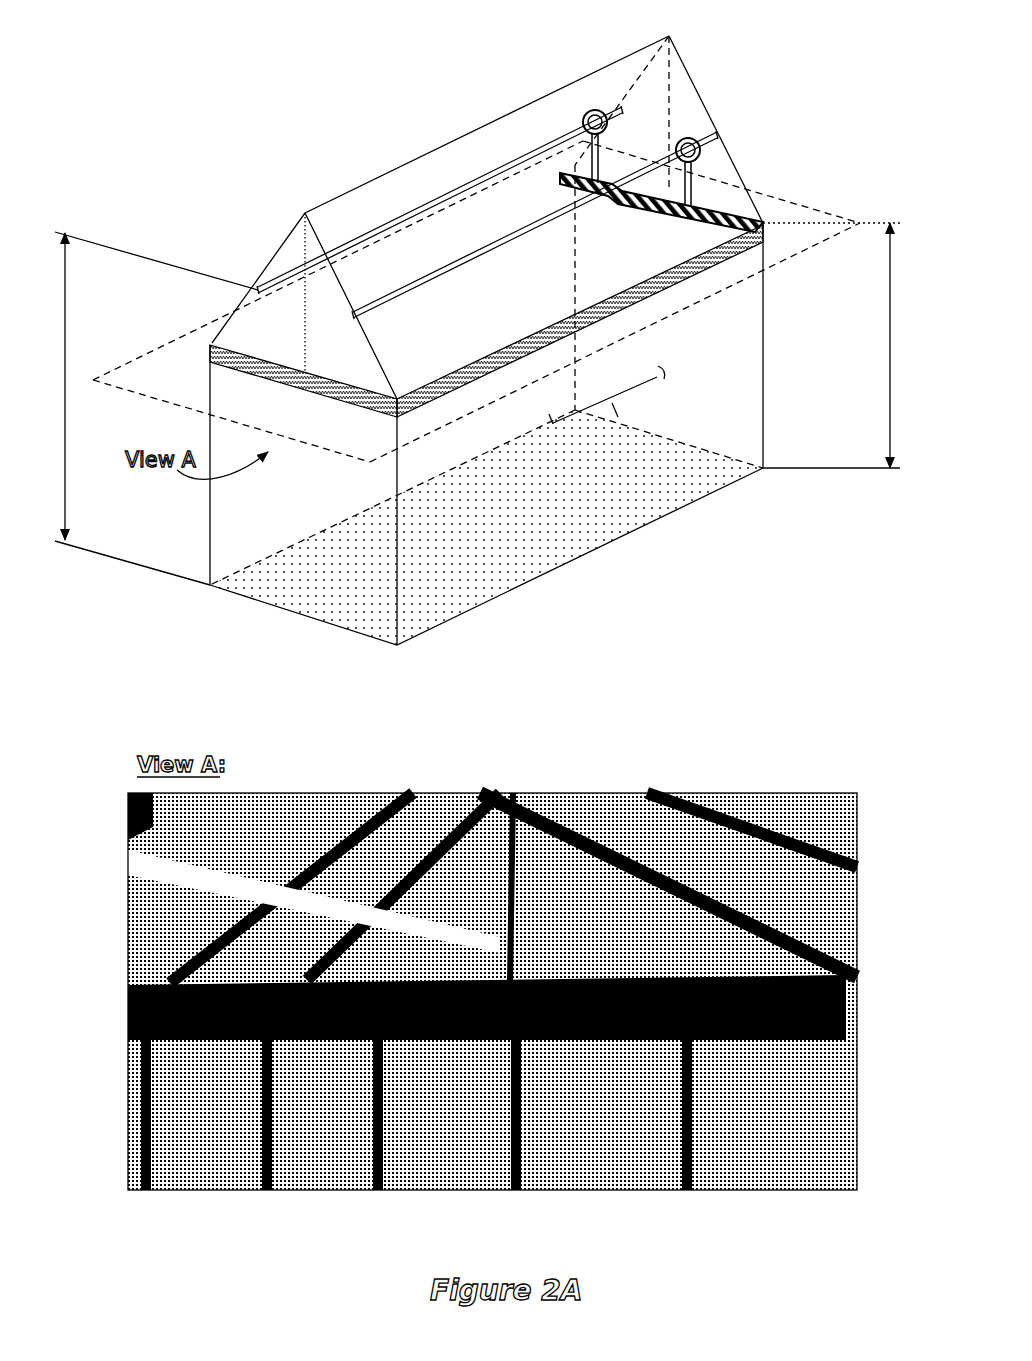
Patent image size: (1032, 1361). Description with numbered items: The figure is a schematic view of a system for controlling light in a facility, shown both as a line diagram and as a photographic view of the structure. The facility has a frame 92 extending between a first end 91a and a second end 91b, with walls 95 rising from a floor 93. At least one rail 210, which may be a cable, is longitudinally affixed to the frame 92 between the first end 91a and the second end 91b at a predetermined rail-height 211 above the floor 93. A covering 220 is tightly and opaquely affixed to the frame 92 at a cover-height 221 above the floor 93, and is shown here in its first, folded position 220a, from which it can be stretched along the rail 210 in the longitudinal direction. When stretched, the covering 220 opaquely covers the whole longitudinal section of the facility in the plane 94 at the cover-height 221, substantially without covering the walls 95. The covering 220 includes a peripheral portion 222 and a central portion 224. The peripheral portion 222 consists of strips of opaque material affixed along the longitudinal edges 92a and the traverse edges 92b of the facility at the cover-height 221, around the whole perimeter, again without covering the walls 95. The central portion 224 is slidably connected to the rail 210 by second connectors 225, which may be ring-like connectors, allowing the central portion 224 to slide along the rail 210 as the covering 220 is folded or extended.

The first end 91a is at (712, 86).
The second end 91b is at (284, 255).
The frame 92 is at (345, 905).
The longitudinal edges 92a is at (497, 353).
The traverse edges 92b is at (677, 187).
The floor 93 is at (660, 490).
The plane 94 is at (148, 352).
The walls 95 is at (735, 405).
The rail 210 is at (607, 189).
The rail-height 211 is at (65, 433).
The covering 220 is at (606, 402).
The first (folded) position 220a is at (728, 200).
The cover-height 221 is at (853, 345).
The peripheral portion 222 is at (596, 190).
The central portion 224 is at (705, 222).
The second connectors 225 is at (680, 140).